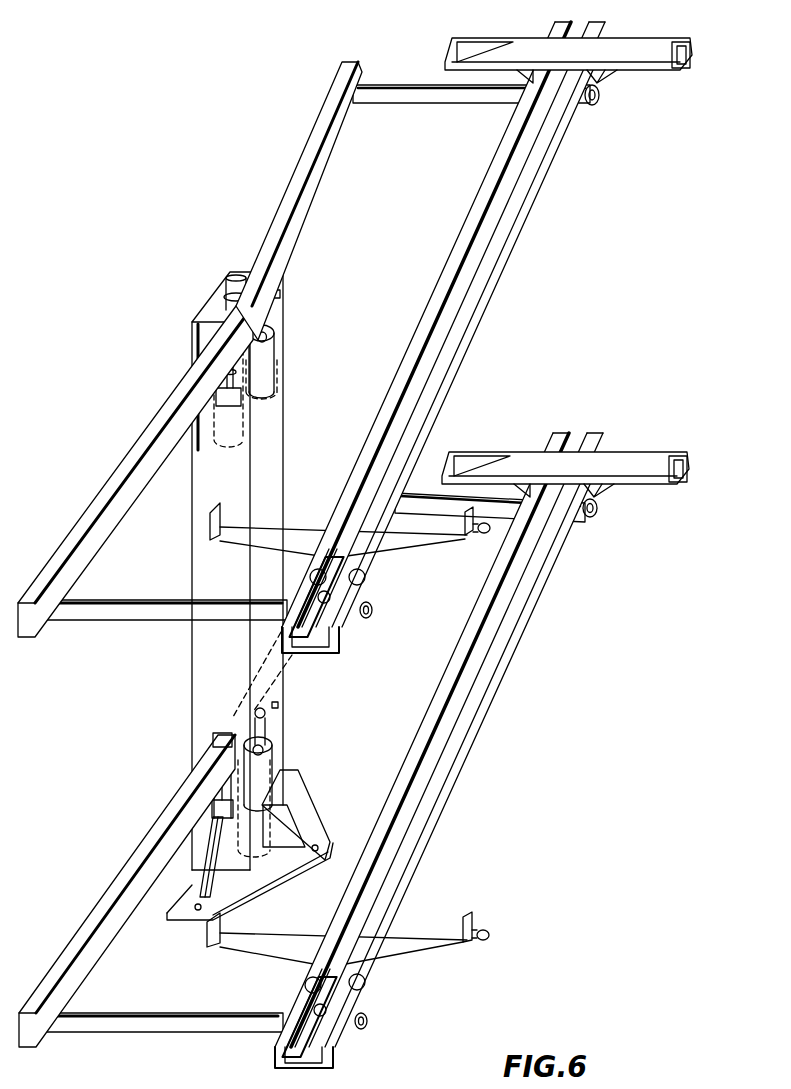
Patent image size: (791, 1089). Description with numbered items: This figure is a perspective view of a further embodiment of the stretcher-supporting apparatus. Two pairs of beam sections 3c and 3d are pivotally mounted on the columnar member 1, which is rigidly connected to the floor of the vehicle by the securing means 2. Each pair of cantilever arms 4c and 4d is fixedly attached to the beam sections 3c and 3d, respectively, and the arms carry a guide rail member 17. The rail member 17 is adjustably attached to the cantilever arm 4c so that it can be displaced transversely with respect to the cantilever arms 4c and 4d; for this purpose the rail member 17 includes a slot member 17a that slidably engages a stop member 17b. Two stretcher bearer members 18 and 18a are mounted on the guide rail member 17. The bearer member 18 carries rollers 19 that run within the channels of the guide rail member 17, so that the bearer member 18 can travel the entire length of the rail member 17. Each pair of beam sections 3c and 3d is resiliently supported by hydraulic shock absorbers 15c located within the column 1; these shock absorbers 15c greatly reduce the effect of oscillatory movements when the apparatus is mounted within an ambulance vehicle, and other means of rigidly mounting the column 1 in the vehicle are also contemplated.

The columnar member 1 is at (263, 437).
The securing means 2 is at (308, 828).
The beam section 3c is at (110, 498).
The beam section 3d is at (303, 173).
The cantilever arm 4c is at (163, 607).
The cantilever arm 4d is at (453, 93).
The hydraulic shock absorber 15c is at (220, 425).
The guide rail member 17 is at (484, 277).
The slot member 17a is at (310, 640).
The stop member 17b is at (330, 597).
The stretcher bearer member 18 is at (283, 537).
The stretcher bearer member 18a is at (652, 47).
The rollers 19 is at (366, 577).